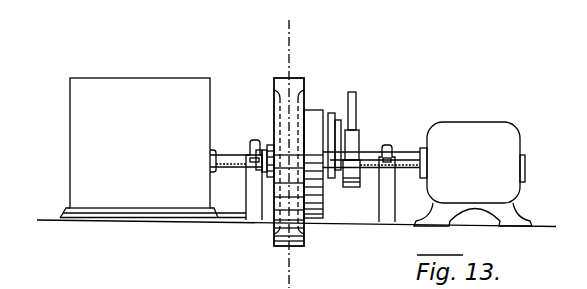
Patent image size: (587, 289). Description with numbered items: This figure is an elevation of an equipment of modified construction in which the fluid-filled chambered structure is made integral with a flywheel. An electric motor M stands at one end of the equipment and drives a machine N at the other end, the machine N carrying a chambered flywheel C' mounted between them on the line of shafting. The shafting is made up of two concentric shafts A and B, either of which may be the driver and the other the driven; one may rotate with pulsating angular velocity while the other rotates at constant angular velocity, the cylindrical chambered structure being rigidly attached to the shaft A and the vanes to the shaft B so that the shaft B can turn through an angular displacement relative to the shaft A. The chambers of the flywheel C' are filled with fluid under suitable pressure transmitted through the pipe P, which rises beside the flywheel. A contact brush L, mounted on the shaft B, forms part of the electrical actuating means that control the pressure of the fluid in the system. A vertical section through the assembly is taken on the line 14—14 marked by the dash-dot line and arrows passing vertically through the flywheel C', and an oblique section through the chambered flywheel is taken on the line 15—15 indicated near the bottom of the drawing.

The machine N is at (153, 148).
The shaft A is at (232, 155).
The chambered flywheel C' is at (304, 155).
The contact brush L is at (332, 113).
The pipe P is at (354, 108).
The shaft B is at (403, 158).
The electric motor M is at (473, 174).
The section line 14— 14 is at (289, 44).
The section line 15— 15 is at (244, 281).